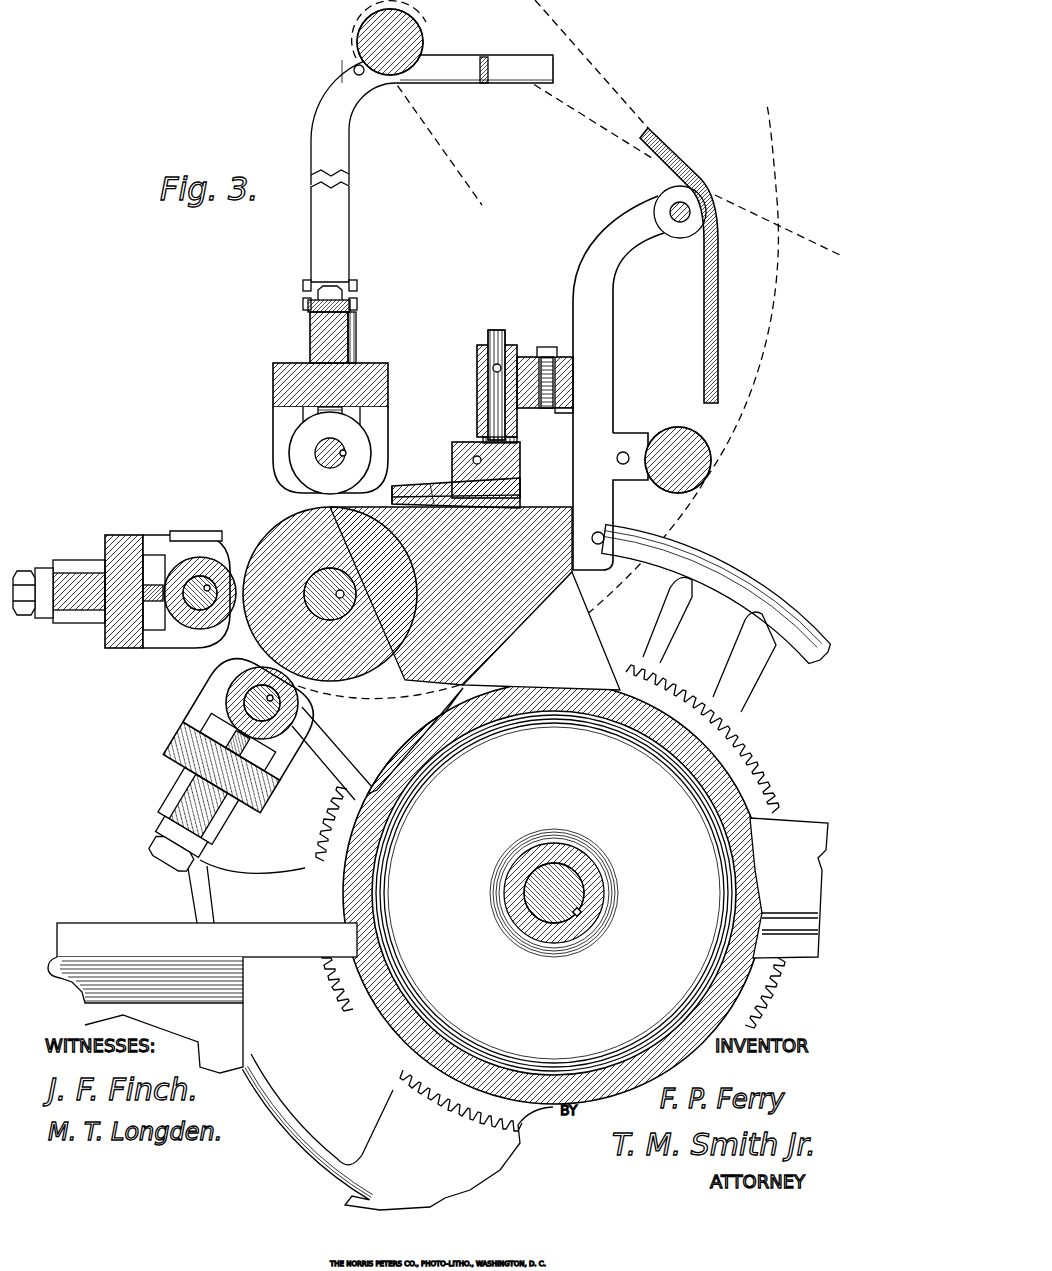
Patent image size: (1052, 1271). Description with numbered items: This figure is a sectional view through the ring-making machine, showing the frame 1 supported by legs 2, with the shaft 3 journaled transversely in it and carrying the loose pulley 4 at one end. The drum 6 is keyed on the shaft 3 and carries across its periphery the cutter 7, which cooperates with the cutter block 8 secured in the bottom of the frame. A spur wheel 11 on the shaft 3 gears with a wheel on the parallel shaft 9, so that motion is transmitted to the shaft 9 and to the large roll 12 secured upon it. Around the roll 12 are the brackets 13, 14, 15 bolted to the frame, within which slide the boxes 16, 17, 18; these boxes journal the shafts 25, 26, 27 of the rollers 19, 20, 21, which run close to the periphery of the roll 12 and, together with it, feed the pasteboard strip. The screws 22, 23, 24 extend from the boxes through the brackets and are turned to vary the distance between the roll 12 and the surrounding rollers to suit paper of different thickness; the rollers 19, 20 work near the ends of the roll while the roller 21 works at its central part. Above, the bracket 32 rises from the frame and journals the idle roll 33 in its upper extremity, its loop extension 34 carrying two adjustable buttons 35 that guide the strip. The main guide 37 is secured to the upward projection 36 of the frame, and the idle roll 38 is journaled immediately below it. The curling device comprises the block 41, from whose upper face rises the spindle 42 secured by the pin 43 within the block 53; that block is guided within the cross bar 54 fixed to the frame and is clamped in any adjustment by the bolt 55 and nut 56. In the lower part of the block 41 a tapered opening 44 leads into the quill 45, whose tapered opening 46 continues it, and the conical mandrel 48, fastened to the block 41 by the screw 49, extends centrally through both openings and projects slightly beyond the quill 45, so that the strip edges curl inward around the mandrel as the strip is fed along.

The frame 1 is at (88, 935).
The legs 2 is at (228, 1035).
The shaft 3 is at (572, 893).
The loose pulley 4 is at (798, 626).
The drum 6 is at (752, 890).
The cutter 7 is at (415, 740).
The cutter block 8 is at (500, 624).
The shaft 9 is at (325, 590).
The spur wheel 11 is at (760, 775).
The roll 12 is at (255, 522).
The bracket 13 is at (178, 760).
The bracket 14 is at (115, 535).
The bracket 15 is at (282, 372).
The box 16 is at (225, 720).
The box 17 is at (165, 560).
The box 18 is at (298, 430).
The roller 19 is at (236, 690).
The roller 20 is at (195, 560).
The roller 21 is at (300, 450).
The screw 22 is at (242, 757).
The screw 23 is at (30, 614).
The screw 24 is at (350, 372).
The shaft 25 is at (284, 712).
The shaft 26 is at (180, 642).
The shaft 27 is at (345, 455).
The bracket 32 is at (340, 224).
The idle roll 33 is at (372, 31).
The loop extension 34 is at (480, 80).
The adjustable buttons 35 is at (537, 82).
The upward projection 36 is at (606, 298).
The main guide 37 is at (712, 282).
The idle roll 38 is at (672, 444).
The block 41 is at (518, 464).
The spindle 42 is at (498, 340).
The pin 43 is at (495, 369).
The tapered opening 44 is at (512, 481).
The quill 45 is at (400, 488).
The tapered opening 46 is at (432, 486).
The mandrel 48 is at (516, 498).
The screw 49 is at (476, 458).
The block 53 is at (480, 372).
The cross bar 54 is at (525, 382).
The bolt 55 is at (548, 348).
The nut 56 is at (560, 411).